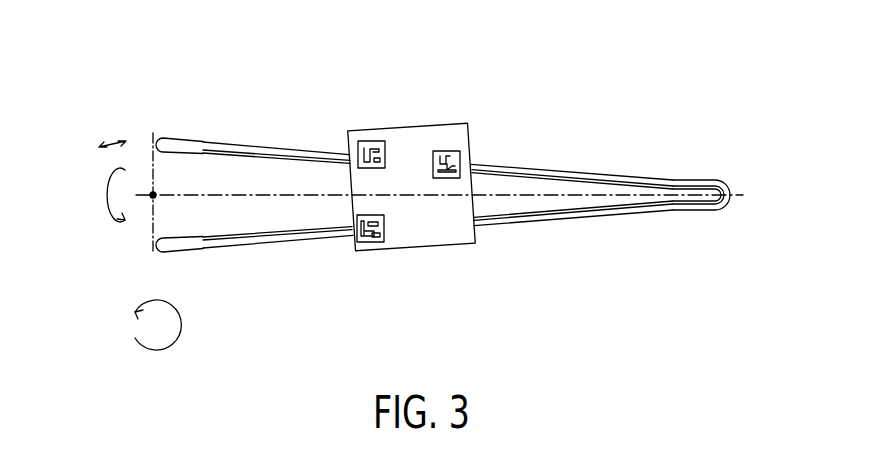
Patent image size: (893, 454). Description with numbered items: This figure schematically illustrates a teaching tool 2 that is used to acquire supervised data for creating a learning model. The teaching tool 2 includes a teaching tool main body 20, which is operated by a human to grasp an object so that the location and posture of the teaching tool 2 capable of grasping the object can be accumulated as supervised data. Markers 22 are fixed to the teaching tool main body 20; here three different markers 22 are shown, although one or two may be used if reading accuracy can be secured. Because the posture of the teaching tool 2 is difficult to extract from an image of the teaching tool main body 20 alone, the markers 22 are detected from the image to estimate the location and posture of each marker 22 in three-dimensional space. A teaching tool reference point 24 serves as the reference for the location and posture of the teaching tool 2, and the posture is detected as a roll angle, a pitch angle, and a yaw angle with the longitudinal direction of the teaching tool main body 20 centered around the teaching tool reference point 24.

The teaching tool 2 is at (640, 73).
The teaching tool main body 20 is at (563, 168).
The marker 22 is at (368, 242).
The teaching tool reference point 24 is at (153, 195).